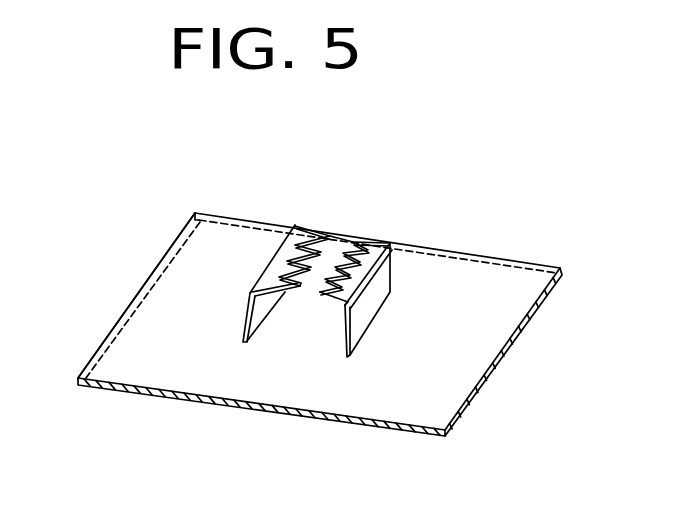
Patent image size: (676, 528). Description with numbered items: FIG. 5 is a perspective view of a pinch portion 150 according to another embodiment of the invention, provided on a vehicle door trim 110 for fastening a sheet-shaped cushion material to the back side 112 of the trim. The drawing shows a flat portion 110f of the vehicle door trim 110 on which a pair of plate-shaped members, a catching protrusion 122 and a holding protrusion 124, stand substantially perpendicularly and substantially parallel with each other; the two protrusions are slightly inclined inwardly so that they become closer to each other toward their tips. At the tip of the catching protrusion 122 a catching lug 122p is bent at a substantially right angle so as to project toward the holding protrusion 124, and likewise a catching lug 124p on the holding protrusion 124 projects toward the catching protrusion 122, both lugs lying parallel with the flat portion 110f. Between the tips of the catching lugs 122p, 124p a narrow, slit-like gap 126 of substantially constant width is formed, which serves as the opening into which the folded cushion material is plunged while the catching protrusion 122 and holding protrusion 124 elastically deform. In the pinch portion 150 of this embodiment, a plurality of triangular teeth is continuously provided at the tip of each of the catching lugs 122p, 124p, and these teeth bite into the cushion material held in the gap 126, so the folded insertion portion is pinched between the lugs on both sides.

The vehicle door trim 110 is at (293, 344).
The flat portion 110f is at (122, 410).
The back side 112 is at (470, 355).
The pinch portion 150 is at (228, 271).
The catching protrusion 122 is at (236, 319).
The catching lug 122p is at (290, 305).
The holding protrusion 124 is at (393, 336).
The catching lug 124p is at (325, 318).
The gap 126 is at (343, 237).